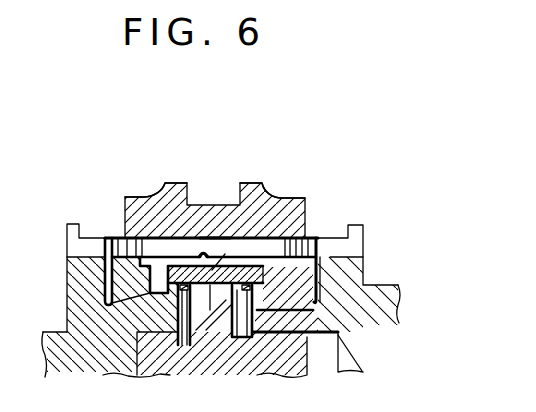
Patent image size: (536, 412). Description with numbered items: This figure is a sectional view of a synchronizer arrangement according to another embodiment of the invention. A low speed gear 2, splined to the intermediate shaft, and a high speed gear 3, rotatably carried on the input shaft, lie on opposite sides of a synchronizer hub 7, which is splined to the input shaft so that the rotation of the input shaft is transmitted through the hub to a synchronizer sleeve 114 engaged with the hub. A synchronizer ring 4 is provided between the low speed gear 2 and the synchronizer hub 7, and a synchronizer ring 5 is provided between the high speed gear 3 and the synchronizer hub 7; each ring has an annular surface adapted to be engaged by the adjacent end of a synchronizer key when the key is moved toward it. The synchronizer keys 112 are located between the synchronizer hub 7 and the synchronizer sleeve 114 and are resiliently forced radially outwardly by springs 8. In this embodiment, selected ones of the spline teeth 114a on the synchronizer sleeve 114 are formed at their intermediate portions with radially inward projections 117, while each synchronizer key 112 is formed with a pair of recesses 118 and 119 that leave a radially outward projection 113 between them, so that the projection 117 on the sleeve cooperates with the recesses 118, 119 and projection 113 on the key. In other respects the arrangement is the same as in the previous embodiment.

The low speed gear 2 is at (352, 236).
The high speed gear 3 is at (73, 236).
The synchronizer ring 4 is at (303, 246).
The synchronizer ring 5 is at (118, 247).
The synchronizer hub 7 is at (232, 352).
The spring 8 is at (204, 344).
The synchronizer key 112 is at (228, 308).
The radially outward projection 113 is at (208, 255).
The synchronizer sleeve 114 is at (194, 195).
The spline teeth 114a is at (146, 196).
The radially inward projection 117 is at (213, 243).
The recess 118 is at (147, 314).
The recess 119 is at (280, 246).